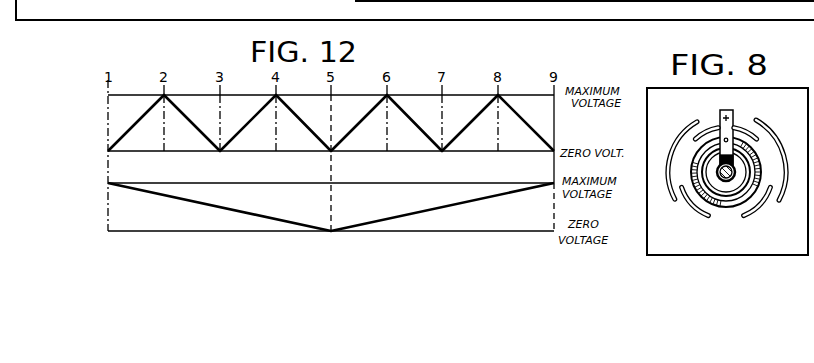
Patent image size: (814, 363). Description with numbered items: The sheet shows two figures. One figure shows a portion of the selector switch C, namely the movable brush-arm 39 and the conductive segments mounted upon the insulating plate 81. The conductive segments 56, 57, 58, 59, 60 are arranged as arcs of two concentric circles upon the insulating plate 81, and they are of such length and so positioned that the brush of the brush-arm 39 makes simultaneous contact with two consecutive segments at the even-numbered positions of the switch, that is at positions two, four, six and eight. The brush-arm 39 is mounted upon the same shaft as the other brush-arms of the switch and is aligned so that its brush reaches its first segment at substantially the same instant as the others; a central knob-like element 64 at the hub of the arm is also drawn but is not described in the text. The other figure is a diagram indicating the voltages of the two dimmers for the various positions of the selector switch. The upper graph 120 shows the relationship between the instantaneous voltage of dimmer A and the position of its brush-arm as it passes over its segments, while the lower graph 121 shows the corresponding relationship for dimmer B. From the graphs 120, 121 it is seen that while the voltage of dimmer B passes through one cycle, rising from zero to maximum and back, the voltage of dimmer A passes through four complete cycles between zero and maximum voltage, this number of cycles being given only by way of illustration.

In FIG. 12, the upper graph 120 is at (110, 150).
In FIG. 12, the lower graph 121 is at (110, 185).
In FIG. 8, the insulating plate 81 is at (647, 88).
In FIG. 8, the knob 64 is at (724, 208).
In FIG. 8, the brush-arm 39 is at (729, 188).
In FIG. 8, the conductive segment 57 is at (682, 135).
In FIG. 8, the conductive segment 58 is at (741, 133).
In FIG. 8, the conductive segment 59 is at (784, 157).
In FIG. 8, the conductive segment 56 is at (687, 203).
In FIG. 8, the conductive segment 60 is at (763, 203).